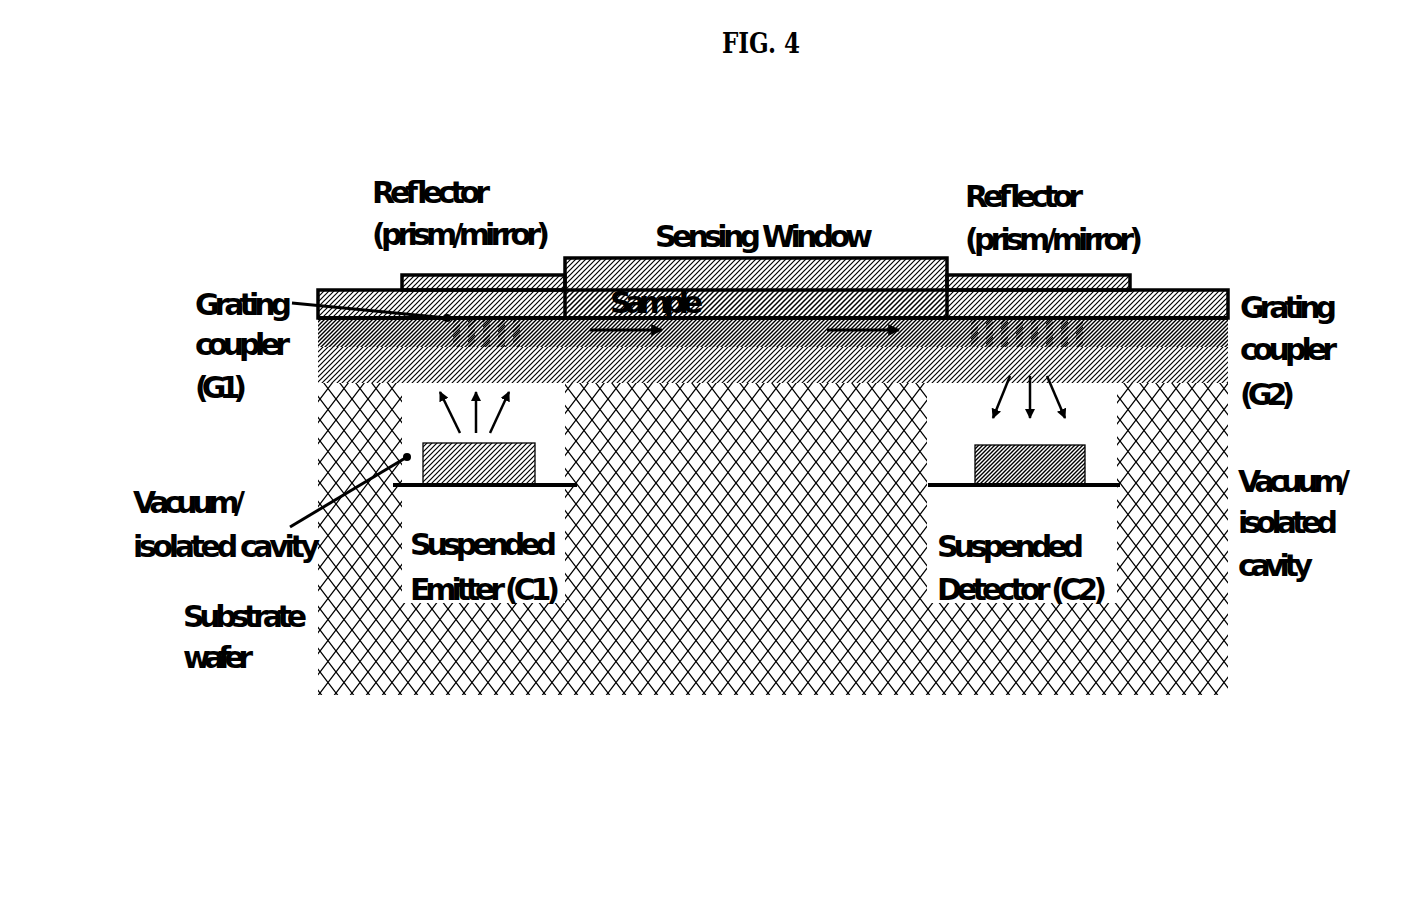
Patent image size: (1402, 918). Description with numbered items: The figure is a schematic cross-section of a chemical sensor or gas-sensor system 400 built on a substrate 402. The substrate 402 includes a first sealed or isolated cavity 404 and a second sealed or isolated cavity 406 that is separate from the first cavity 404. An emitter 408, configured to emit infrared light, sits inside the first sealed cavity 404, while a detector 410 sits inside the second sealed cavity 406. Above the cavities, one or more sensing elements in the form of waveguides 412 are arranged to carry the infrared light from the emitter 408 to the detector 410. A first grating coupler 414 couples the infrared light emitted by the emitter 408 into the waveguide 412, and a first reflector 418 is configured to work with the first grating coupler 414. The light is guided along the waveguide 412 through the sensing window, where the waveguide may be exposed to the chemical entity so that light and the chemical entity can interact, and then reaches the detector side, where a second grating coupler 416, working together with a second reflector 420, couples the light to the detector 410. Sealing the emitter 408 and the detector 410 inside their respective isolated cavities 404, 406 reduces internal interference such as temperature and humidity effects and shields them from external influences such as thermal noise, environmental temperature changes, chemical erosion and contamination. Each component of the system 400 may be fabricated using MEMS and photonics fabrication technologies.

The chemical sensor or gas-sensor system 400 is at (1258, 722).
The substrate 402 is at (815, 622).
The first sealed cavity 404 is at (467, 603).
The second sealed cavity 406 is at (1102, 597).
The emitter 408 is at (497, 470).
The detector 410 is at (1052, 470).
The waveguide 412 is at (932, 332).
The first grating coupler 414 is at (503, 330).
The second grating coupler 416 is at (1057, 333).
The first reflector 418 is at (547, 275).
The second reflector 420 is at (1117, 283).